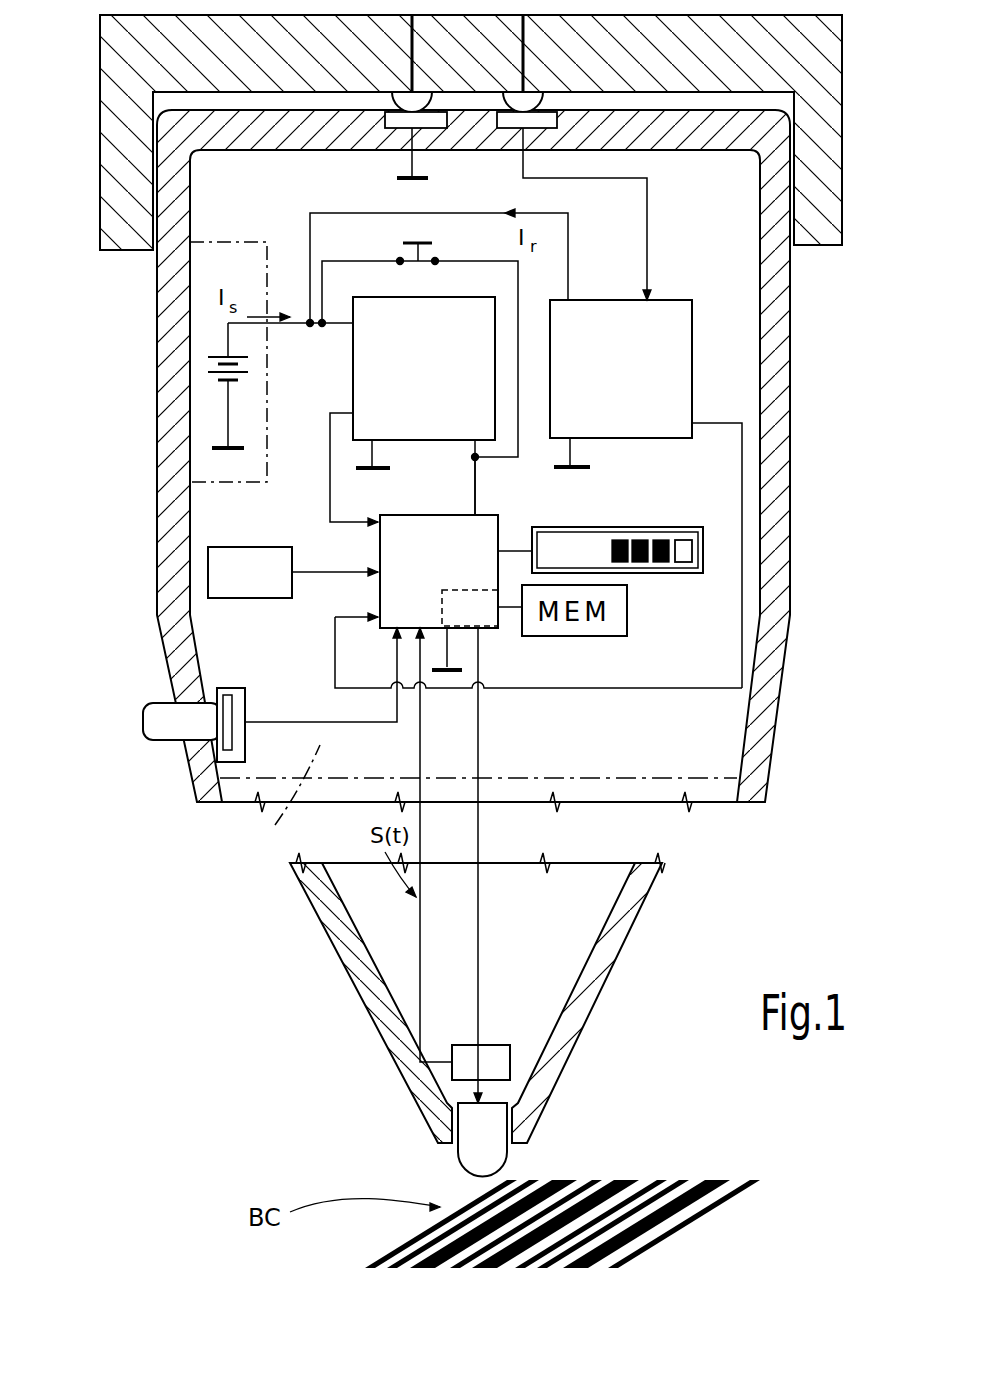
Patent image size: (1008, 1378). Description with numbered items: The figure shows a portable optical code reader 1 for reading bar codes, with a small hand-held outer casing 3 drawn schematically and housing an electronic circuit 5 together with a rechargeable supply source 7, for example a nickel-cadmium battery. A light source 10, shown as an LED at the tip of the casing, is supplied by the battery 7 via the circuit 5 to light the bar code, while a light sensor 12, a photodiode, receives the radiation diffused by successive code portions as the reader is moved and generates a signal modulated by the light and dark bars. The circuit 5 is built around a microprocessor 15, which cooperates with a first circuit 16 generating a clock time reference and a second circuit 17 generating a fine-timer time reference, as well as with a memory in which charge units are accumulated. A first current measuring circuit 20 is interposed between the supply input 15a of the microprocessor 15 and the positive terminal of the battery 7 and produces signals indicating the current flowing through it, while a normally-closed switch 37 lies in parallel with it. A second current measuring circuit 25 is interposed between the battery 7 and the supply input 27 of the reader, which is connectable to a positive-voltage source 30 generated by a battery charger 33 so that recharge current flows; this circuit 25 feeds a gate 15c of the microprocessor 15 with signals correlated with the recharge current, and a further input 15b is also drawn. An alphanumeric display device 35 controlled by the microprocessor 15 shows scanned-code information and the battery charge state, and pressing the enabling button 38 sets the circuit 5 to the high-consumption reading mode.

The portable optical code reader 1 is at (426, 479).
The outer casing 3 is at (200, 785).
The electronic circuit 5 is at (280, 828).
The rechargeable supply source 7 is at (200, 345).
The light source 10 is at (492, 1157).
The light sensor 12 is at (493, 1062).
The microprocessor 15 is at (463, 575).
The supply input of microprocessor 15a is at (488, 515).
The microprocessor input 15b is at (378, 533).
The gate of microprocessor 15c is at (378, 606).
The first circuit 16 is at (220, 570).
The second circuit 17 is at (483, 612).
The first current measuring circuit 20 is at (353, 383).
The second current measuring circuit 25 is at (682, 350).
The supply input 27 is at (502, 118).
The positive-voltage source 30 is at (508, 92).
The battery charger 33 is at (822, 245).
The display device 35 is at (708, 550).
The switch 37 is at (421, 265).
The enabling button 38 is at (147, 722).